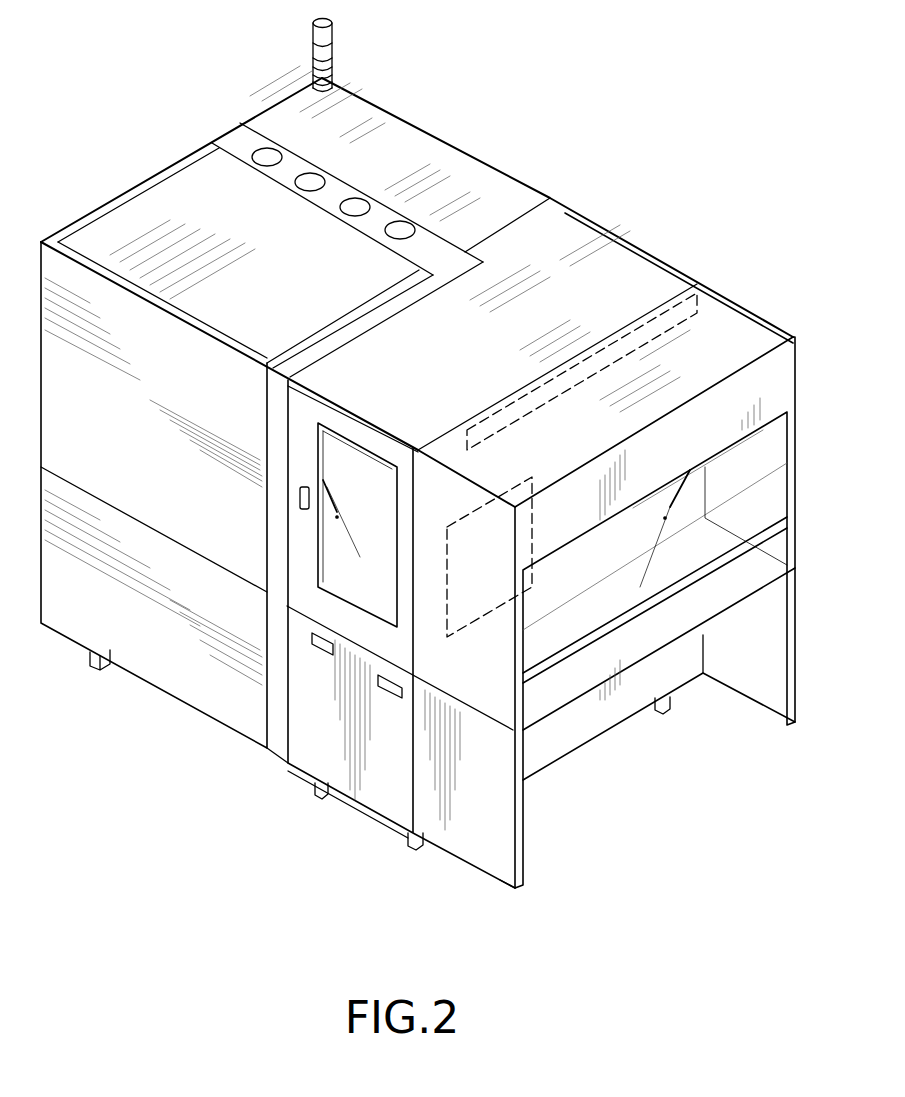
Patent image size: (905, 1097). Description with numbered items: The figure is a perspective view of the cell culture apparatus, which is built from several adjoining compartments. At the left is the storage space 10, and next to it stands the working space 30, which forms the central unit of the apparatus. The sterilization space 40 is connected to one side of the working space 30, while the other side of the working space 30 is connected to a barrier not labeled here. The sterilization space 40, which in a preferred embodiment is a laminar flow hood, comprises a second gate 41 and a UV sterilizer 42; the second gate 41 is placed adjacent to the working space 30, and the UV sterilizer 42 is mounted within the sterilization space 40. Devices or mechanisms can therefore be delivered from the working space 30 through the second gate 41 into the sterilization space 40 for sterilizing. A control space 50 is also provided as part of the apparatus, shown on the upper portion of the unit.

The storage space 10 is at (125, 193).
The working space 30 is at (620, 238).
The sterilization space 40 is at (737, 303).
The second gate 41 is at (518, 477).
The UV sterilizer 42 is at (644, 336).
The control space 50 is at (413, 135).